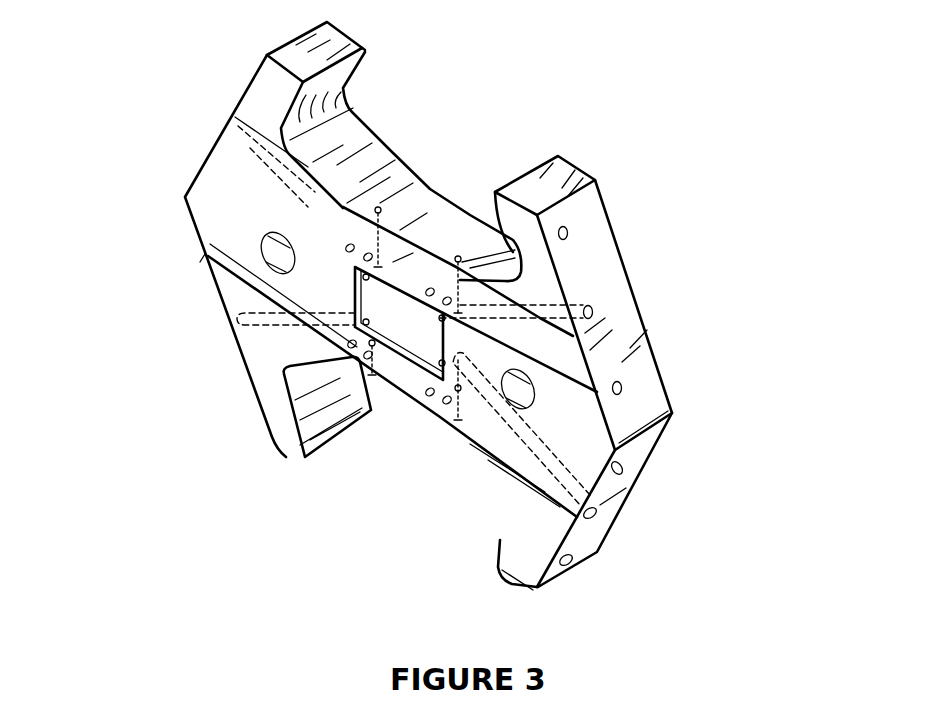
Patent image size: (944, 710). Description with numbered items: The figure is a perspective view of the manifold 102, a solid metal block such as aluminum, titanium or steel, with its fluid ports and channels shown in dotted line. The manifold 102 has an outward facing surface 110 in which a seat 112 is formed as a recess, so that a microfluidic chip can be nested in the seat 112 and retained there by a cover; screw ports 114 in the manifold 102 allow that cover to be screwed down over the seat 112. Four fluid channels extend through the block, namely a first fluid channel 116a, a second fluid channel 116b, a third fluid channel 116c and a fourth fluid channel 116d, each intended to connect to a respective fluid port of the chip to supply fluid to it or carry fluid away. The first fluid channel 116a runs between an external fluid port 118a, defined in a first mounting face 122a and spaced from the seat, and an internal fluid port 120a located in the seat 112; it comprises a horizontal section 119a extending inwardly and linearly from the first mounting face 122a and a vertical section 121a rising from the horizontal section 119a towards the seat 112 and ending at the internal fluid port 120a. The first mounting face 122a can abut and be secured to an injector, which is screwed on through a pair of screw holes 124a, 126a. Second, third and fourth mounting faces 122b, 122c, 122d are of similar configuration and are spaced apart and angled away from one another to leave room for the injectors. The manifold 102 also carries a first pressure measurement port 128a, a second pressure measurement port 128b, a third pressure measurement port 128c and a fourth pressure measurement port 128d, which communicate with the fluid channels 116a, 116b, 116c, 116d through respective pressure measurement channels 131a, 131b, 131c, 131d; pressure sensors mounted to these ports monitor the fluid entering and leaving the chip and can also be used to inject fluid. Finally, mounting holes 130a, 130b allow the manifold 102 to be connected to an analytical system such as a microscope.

The manifold 102 is at (692, 248).
The outward facing surface 110 is at (507, 505).
The seat 112 is at (402, 382).
The screw ports 114 is at (425, 262).
The first fluid channel 116a is at (585, 532).
The second fluid channel 116b is at (537, 303).
The third fluid channel 116c is at (275, 163).
The fourth fluid channel 116d is at (257, 327).
The external fluid port 118a is at (597, 513).
The horizontal section 119a is at (560, 515).
The internal fluid port 120a is at (430, 400).
The vertical section 121a is at (447, 347).
The first mounting face 122a is at (617, 490).
The second mounting face 122b is at (628, 312).
The third mounting face 122c is at (218, 137).
The fourth mounting face 122d is at (222, 298).
The screw hole 124a is at (572, 562).
The screw hole 126a is at (622, 468).
The first pressure measurement port 128a is at (465, 428).
The second pressure measurement port 128b is at (458, 255).
The third pressure measurement port 128c is at (372, 250).
The fourth pressure measurement port 128d is at (296, 440).
The mounting hole 130a is at (266, 245).
The mounting hole 130b is at (507, 385).
The pressure measurement channel 131a is at (458, 393).
The pressure measurement channel 131b is at (456, 256).
The pressure measurement channel 131c is at (458, 255).
The pressure measurement channel 131d is at (355, 452).